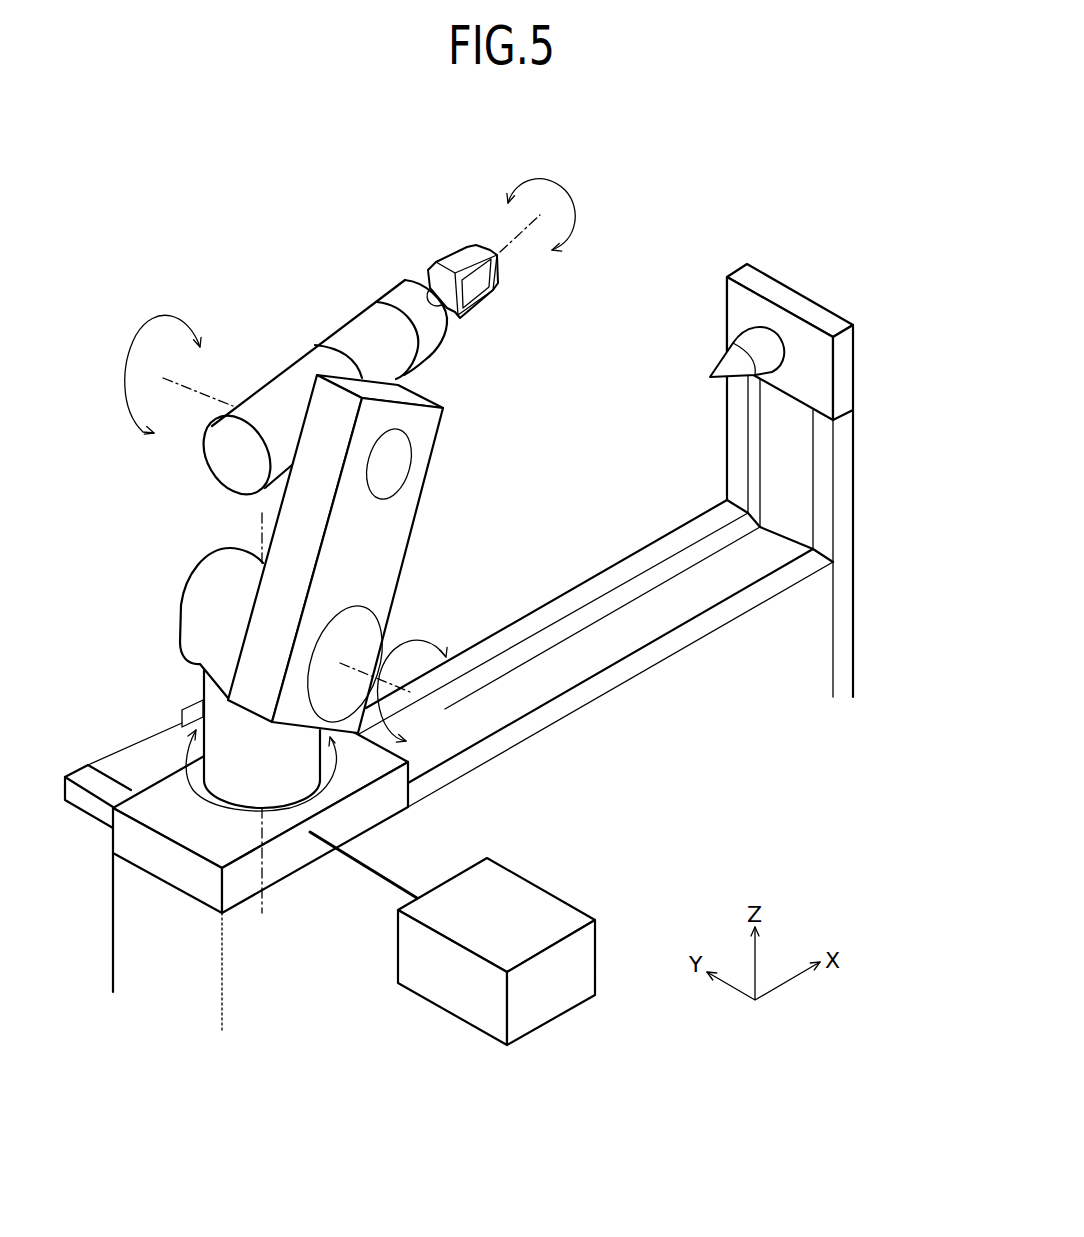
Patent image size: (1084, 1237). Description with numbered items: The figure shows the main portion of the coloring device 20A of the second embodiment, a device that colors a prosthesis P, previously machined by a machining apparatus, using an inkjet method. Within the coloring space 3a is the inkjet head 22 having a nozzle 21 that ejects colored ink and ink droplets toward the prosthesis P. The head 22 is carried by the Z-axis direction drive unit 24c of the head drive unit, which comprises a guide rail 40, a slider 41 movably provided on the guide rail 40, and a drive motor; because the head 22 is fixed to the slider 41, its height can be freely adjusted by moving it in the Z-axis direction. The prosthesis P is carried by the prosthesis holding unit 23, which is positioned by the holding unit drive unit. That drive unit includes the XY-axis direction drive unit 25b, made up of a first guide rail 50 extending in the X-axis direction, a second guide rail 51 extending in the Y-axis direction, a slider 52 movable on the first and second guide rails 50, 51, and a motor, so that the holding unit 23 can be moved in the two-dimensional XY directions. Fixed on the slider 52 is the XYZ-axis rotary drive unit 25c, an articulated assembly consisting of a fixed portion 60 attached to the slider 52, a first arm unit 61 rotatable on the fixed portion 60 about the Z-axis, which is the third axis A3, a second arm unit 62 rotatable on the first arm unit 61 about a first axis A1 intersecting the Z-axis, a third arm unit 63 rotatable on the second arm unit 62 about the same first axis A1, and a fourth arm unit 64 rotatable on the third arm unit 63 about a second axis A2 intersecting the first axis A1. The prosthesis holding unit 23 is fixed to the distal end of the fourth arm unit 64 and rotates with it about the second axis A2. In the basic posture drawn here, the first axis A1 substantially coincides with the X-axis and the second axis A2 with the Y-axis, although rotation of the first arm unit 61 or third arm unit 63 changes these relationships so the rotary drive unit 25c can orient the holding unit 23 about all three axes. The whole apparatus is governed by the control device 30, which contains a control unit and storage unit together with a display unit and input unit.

The coloring device 20A is at (803, 468).
The nozzle 21 is at (721, 361).
The inkjet head 22 is at (843, 342).
The slider 41 is at (823, 377).
The prosthesis holding unit 23 is at (437, 330).
The Z-axis direction drive unit 24c is at (855, 395).
The XY-axis direction drive unit 25b is at (225, 866).
The XYZ-axis rotary drive unit 25c is at (324, 508).
The control device 30 is at (557, 890).
The coloring space 3a is at (667, 254).
The guide rail 40 is at (738, 448).
The first guide rail 50 is at (722, 613).
The second guide rail 51 is at (85, 770).
The slider 52 is at (118, 835).
The fixed portion 60 is at (217, 702).
The first arm unit 61 is at (202, 612).
The second arm unit 62 is at (385, 547).
The third arm unit 63 is at (288, 388).
The fourth arm unit 64 is at (357, 340).
The prosthesis P is at (447, 260).
The first axis A1 is at (276, 528).
The second axis A2 is at (510, 242).
The third axis A3 is at (261, 727).